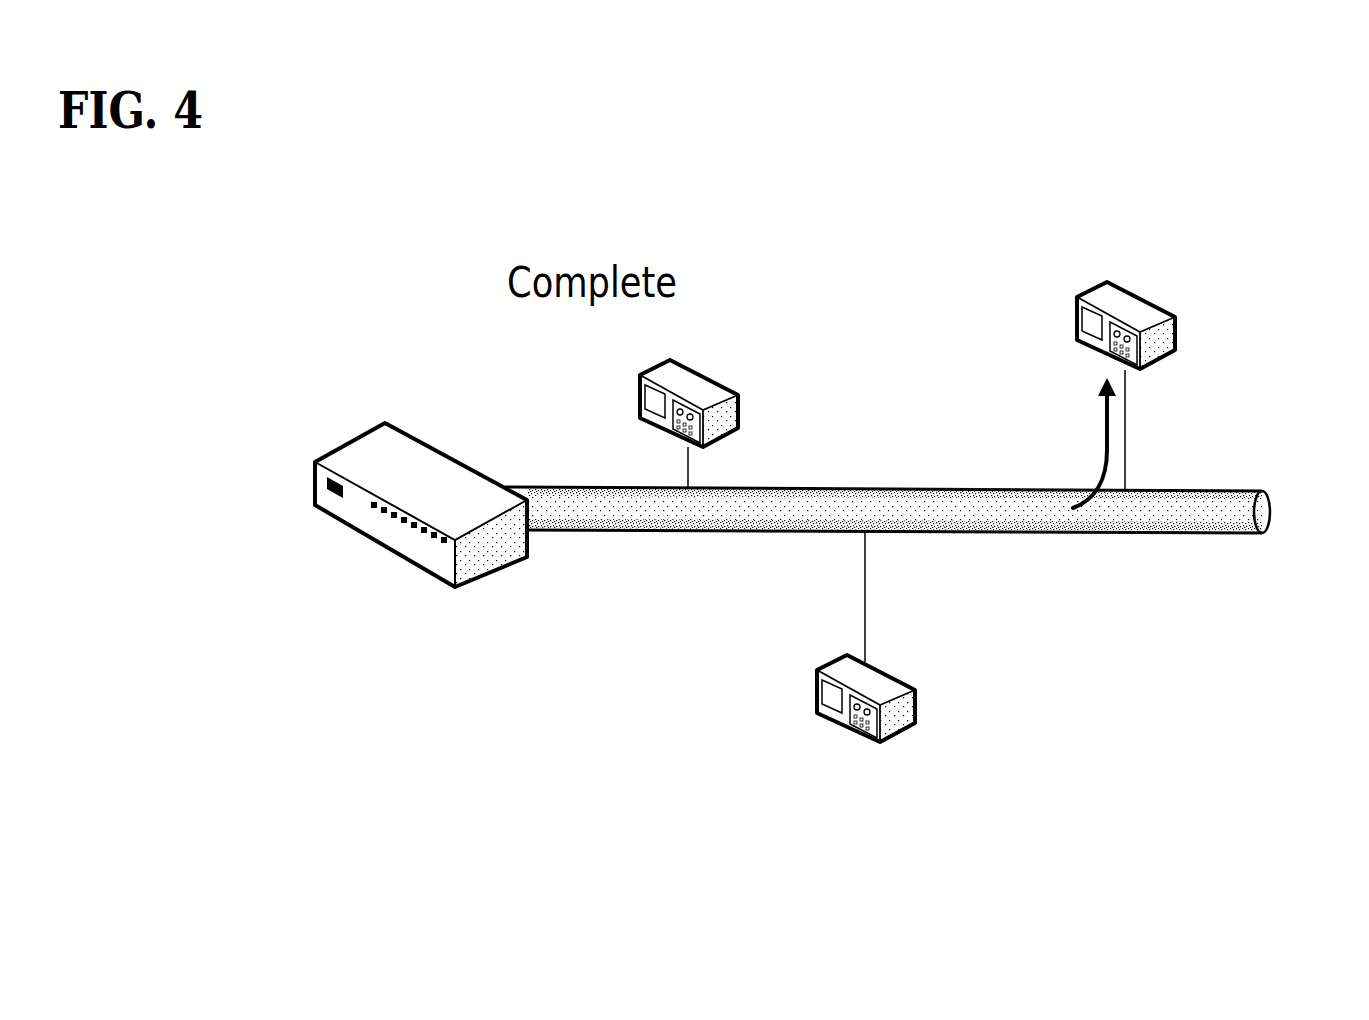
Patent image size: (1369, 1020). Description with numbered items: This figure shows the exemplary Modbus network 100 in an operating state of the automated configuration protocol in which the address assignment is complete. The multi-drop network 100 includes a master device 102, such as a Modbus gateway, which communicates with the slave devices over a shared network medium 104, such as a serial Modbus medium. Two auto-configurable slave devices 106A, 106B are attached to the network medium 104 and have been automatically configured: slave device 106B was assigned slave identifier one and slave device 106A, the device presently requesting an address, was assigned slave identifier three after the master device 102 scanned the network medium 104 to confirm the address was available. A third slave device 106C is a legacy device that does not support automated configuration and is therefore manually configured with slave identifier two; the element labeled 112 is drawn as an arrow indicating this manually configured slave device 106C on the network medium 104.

The multi-drop network 100 is at (211, 277).
The master device 102 is at (315, 492).
The network medium 104 is at (1271, 513).
The slave device 106A is at (908, 718).
The slave device 106B is at (705, 382).
The slave device 106C is at (1177, 340).
The manual configuration arrow 112 is at (1100, 438).